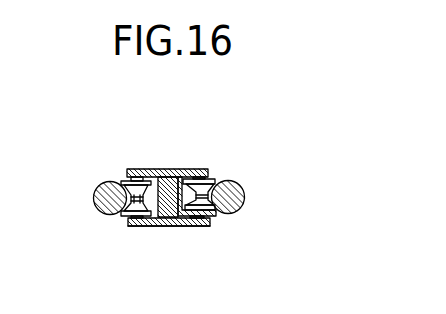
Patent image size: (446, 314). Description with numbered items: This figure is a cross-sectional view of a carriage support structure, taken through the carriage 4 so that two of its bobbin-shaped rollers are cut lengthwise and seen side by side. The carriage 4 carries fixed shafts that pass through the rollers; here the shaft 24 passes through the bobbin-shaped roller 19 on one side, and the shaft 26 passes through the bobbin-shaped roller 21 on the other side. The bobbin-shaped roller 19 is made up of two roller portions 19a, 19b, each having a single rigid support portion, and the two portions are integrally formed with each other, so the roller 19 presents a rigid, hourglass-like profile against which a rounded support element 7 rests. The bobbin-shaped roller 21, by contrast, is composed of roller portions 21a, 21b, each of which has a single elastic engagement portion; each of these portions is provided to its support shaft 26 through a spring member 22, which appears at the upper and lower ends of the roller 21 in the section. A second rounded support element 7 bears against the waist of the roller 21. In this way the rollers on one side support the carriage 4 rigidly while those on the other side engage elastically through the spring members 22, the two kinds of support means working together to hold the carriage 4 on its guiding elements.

The carriage 4 is at (161, 227).
The ball 7 is at (94, 202).
The bobbin-shaped roller 19 is at (110, 195).
The roller portion 19a is at (135, 180).
The roller portion 19b is at (125, 214).
The bobbin-shaped roller 21 is at (224, 205).
The roller portion 21a is at (212, 179).
The roller portion 21b is at (185, 226).
The spring member 22 is at (198, 177).
The shaft 24 is at (139, 227).
The shaft 26 is at (178, 178).